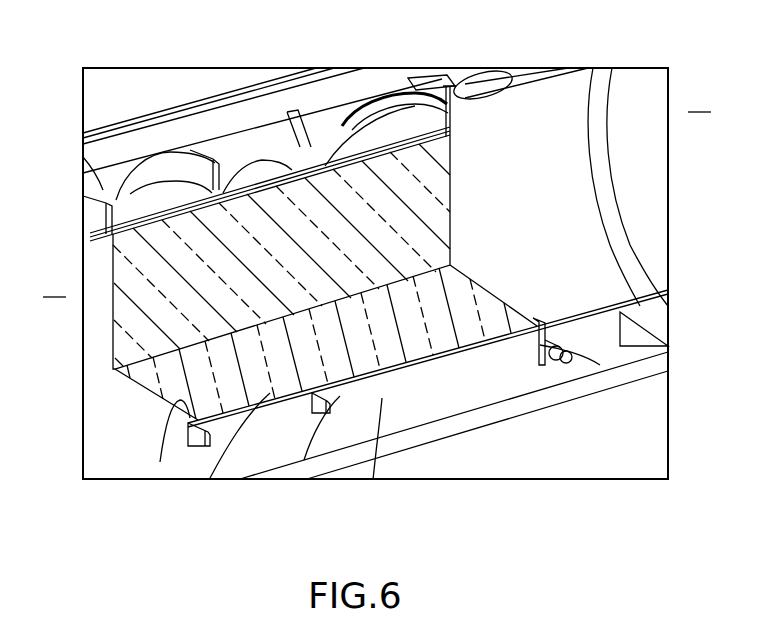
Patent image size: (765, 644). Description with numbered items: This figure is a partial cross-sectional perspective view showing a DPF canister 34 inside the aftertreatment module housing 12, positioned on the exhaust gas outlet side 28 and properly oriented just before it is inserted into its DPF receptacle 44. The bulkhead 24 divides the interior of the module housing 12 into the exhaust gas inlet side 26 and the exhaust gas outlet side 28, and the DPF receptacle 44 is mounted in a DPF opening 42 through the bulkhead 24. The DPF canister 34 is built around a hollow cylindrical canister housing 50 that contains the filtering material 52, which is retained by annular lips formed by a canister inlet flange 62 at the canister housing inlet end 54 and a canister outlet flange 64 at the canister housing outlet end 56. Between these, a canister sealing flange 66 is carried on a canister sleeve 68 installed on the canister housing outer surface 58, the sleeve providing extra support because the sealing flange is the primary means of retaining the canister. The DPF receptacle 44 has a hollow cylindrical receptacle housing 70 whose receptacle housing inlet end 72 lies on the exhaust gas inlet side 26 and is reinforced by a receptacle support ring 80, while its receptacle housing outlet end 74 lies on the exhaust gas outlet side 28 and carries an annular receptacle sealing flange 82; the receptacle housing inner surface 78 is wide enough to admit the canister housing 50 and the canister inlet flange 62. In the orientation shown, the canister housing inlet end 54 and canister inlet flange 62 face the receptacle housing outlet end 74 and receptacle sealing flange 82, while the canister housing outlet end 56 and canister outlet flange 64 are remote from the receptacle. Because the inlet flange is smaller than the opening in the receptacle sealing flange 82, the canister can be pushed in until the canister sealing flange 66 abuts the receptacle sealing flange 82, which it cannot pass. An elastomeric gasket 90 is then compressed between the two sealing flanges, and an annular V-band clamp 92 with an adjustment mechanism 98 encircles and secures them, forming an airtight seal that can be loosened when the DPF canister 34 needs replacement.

The aftertreatment module housing 12 is at (120, 88).
The bulkhead 24 is at (497, 70).
The exhaust gas inlet side 26 is at (699, 101).
The exhaust gas outlet side 28 is at (54, 286).
The DPF canister 34 is at (97, 417).
The DPF opening 42 is at (470, 73).
The DPF receptacle 44 is at (625, 223).
The canister housing 50 is at (262, 106).
The filtering material 52 is at (170, 405).
The canister housing inlet end 54 is at (540, 332).
The canister housing outlet end 56 is at (108, 212).
The canister housing outer surface 58 is at (288, 160).
The canister inlet flange 62 is at (412, 110).
The canister outlet flange 64 is at (95, 218).
The canister sealing flange 66 is at (171, 166).
The canister sleeve 68 is at (237, 177).
The receptacle housing 70 is at (617, 156).
The receptacle housing inlet end 72 is at (593, 191).
The receptacle housing outlet end 74 is at (600, 358).
The receptacle housing inner surface 78 is at (568, 95).
The receptacle support ring 80 is at (627, 266).
The receptacle sealing flange 82 is at (505, 74).
The gasket 90 is at (365, 115).
The clamp 92 is at (432, 80).
The adjustment mechanism 98 is at (565, 335).